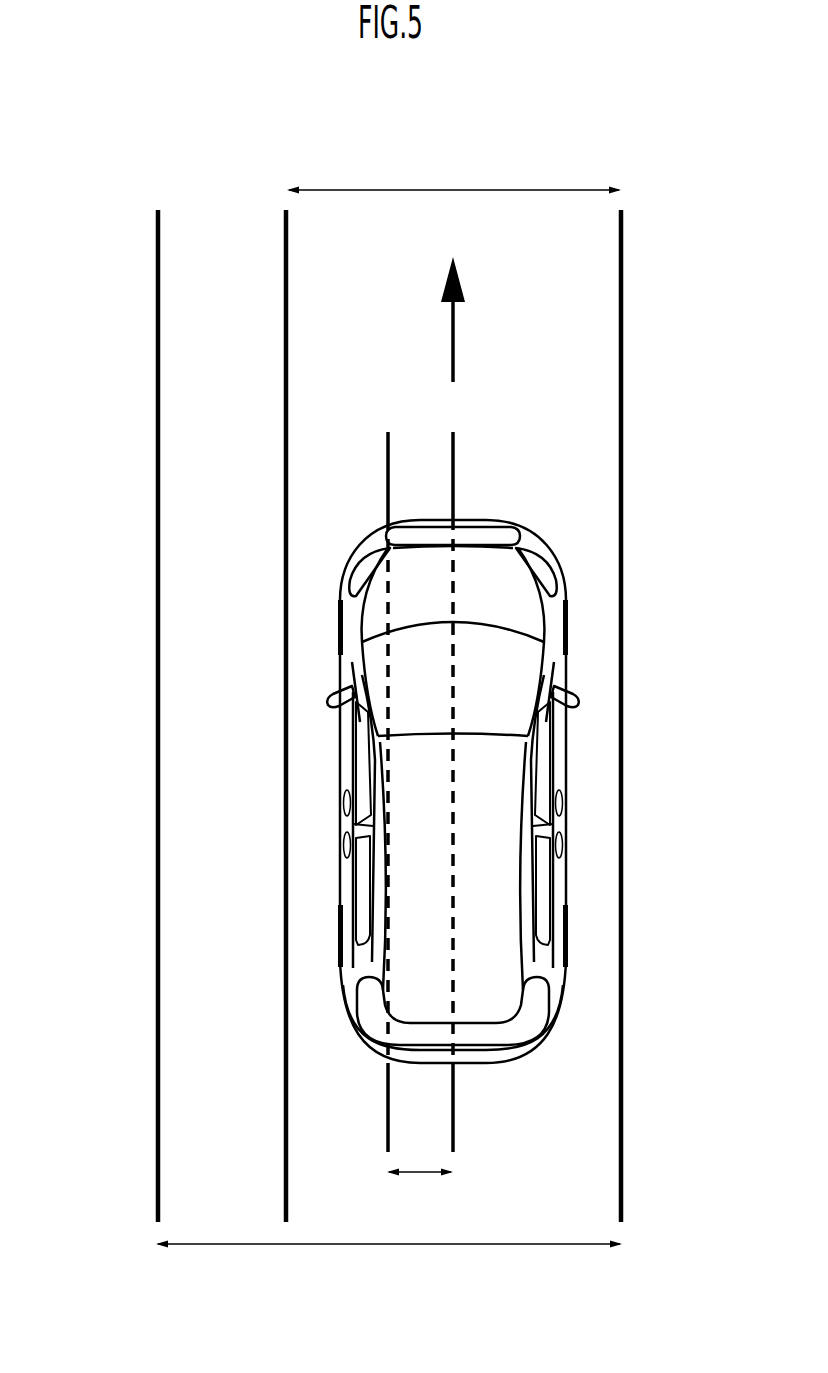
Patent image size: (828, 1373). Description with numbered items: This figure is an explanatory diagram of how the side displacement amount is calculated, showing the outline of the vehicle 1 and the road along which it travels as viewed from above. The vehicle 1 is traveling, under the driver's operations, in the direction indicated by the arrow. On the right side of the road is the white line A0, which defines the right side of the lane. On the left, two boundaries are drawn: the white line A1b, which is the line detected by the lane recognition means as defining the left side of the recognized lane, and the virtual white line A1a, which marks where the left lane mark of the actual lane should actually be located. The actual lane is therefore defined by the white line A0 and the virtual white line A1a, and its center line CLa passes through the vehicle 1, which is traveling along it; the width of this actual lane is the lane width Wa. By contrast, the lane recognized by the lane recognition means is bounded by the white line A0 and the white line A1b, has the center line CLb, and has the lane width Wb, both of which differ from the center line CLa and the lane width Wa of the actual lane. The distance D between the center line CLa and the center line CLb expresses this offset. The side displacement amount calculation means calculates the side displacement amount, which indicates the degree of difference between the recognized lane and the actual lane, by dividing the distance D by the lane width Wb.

The vehicle 1 is at (553, 638).
The white line A0 is at (622, 502).
The virtual white line A1a is at (285, 250).
The white line A1b is at (157, 270).
The center line of the actual lane CLa is at (453, 478).
The center line of the recognized lane CLb is at (388, 478).
The lane width of the actual lane Wa is at (454, 170).
The lane width of the recognized lane Wb is at (389, 1267).
The distance between center lines D is at (420, 1192).